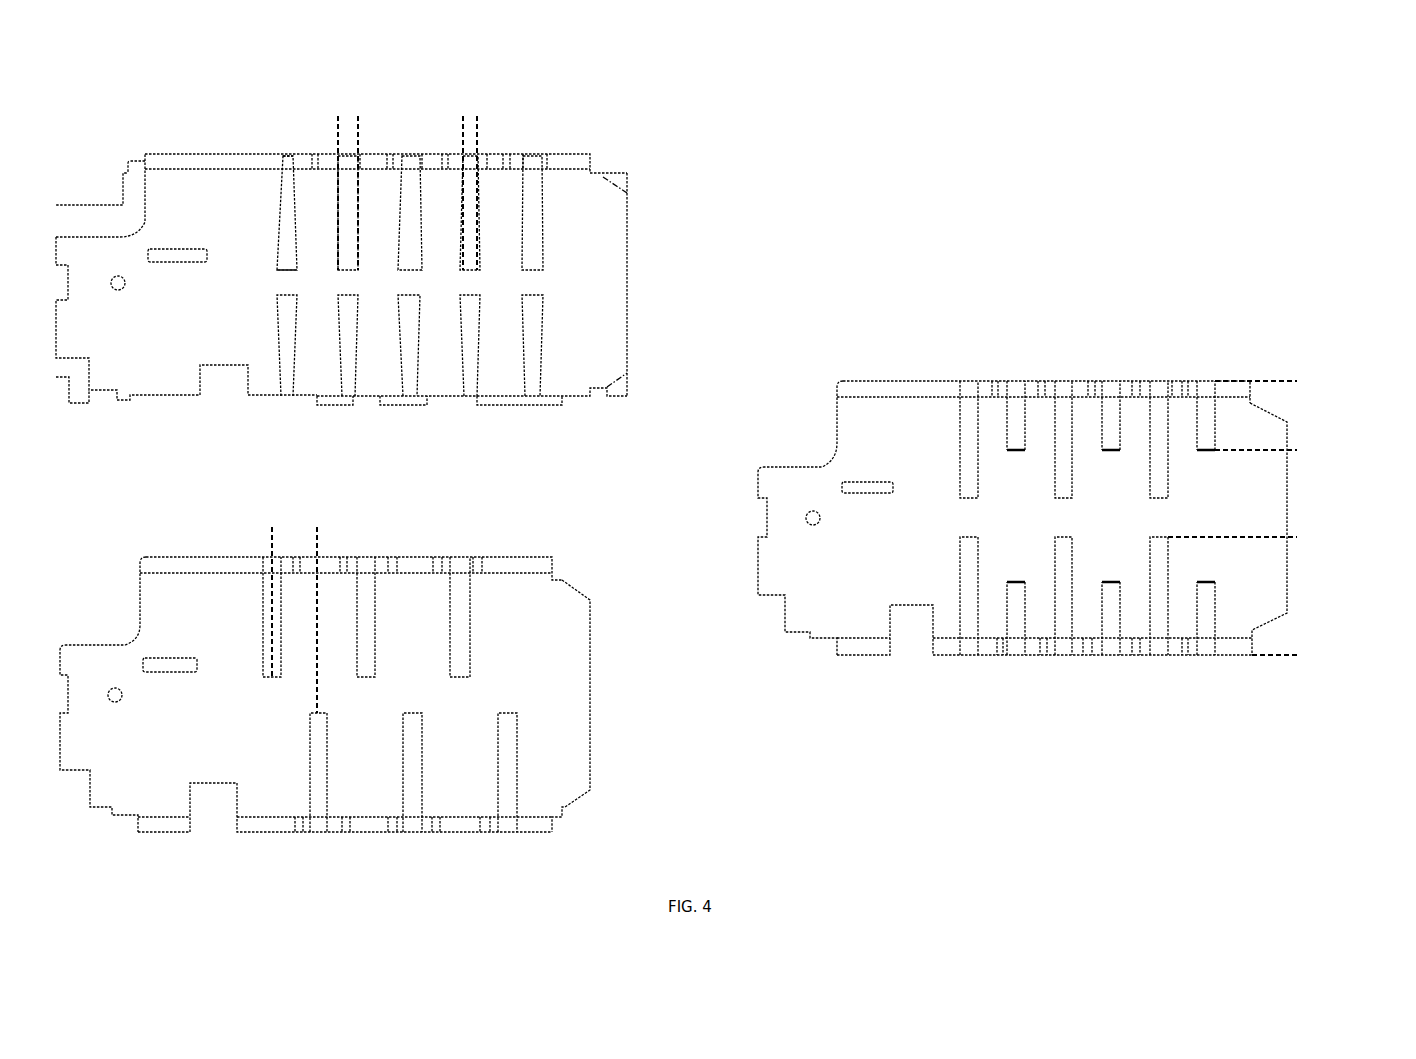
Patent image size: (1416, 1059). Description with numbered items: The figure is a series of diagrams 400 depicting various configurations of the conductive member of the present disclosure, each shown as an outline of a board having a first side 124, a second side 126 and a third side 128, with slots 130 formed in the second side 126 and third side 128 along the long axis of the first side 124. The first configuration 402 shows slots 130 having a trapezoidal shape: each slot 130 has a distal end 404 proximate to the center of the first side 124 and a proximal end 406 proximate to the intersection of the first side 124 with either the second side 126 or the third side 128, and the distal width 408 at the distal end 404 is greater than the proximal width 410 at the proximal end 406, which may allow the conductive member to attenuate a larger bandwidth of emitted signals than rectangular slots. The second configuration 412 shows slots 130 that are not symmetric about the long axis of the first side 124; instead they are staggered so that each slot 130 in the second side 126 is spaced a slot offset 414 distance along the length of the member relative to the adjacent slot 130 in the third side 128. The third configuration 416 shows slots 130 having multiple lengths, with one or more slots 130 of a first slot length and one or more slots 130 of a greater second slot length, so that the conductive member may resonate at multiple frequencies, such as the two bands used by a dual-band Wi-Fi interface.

The series of diagrams 400 is at (1294, 58).
The first configuration 402 is at (270, 303).
The distal end 404 is at (290, 270).
The proximal end 406 is at (290, 163).
The distal width 408 is at (358, 116).
The proximal width 410 is at (477, 116).
The second configuration 412 is at (272, 715).
The slot offset 414 is at (317, 527).
The third configuration 416 is at (955, 540).
The first side 124 is at (607, 263).
The second side 126 is at (562, 395).
The third side 128 is at (562, 153).
The slots 130 is at (532, 168).